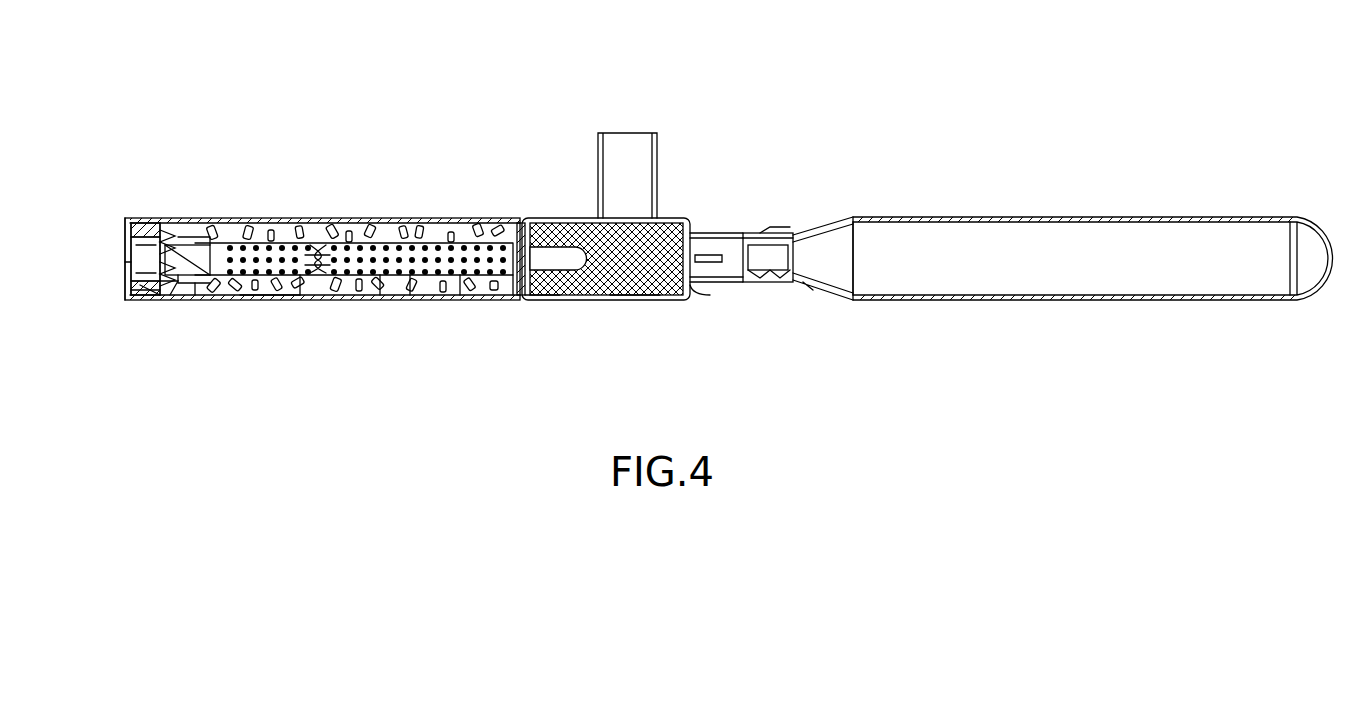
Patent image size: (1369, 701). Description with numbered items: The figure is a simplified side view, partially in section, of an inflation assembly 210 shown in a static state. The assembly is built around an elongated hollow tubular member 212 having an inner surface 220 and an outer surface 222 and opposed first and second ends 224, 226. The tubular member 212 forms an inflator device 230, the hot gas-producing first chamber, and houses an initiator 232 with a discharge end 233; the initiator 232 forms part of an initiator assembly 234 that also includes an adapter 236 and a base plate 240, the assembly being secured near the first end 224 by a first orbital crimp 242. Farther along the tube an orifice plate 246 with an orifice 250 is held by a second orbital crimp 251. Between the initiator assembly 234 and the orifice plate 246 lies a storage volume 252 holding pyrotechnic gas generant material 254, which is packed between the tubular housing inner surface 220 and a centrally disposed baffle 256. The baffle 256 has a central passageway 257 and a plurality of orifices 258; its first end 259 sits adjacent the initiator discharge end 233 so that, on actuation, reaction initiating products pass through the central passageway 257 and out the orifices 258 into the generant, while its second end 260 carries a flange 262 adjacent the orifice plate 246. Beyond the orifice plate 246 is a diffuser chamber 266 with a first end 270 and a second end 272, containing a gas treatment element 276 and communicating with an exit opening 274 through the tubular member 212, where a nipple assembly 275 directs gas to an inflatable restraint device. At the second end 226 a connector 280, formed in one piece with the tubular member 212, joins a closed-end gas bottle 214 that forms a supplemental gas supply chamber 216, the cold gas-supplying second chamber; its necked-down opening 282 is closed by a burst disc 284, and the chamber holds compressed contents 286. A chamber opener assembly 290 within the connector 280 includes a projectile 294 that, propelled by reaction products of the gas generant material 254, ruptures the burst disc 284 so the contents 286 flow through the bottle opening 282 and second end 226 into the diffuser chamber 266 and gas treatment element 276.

The inflation assembly 210 is at (1062, 88).
The elongated hollow tubular member 212 is at (325, 214).
The gas bottle 214 is at (1132, 204).
The supplemental gas supply chamber 216 is at (1090, 302).
The inner surface 220 is at (235, 242).
The outer surface 222 is at (266, 300).
The first end 224 is at (137, 188).
The second end 226 is at (692, 322).
The inflator device 230 is at (334, 302).
The initiator 232 is at (172, 300).
The discharge end 233 is at (210, 300).
The initiator assembly 234 is at (115, 290).
The adapter 236 is at (140, 298).
The base plate 240 is at (155, 298).
The first orbital crimp 242 is at (155, 224).
The orifice plate 246 is at (516, 302).
The orifice 250 is at (522, 216).
The second orbital crimp 251 is at (530, 302).
The storage volume 252 is at (366, 214).
The pyrotechnic gas generant material 254 is at (400, 302).
The baffle 256 is at (437, 216).
The central passageway 257 is at (270, 258).
The orifices 258 is at (422, 302).
The first end 259 is at (203, 232).
The second end 260 is at (480, 302).
The flange 262 is at (485, 214).
The diffuser chamber 266 is at (627, 300).
The first end 270 is at (545, 228).
The second end 272 is at (676, 204).
The exit opening 274 is at (624, 214).
The nipple assembly 275 is at (604, 206).
The gas treatment element 276 is at (692, 300).
The connector 280 is at (762, 226).
The necked-down opening 282 is at (800, 296).
The burst disc 284 is at (792, 228).
The contents 286 is at (1203, 302).
The chamber opener assembly 290 is at (720, 282).
The projectile 294 is at (738, 232).